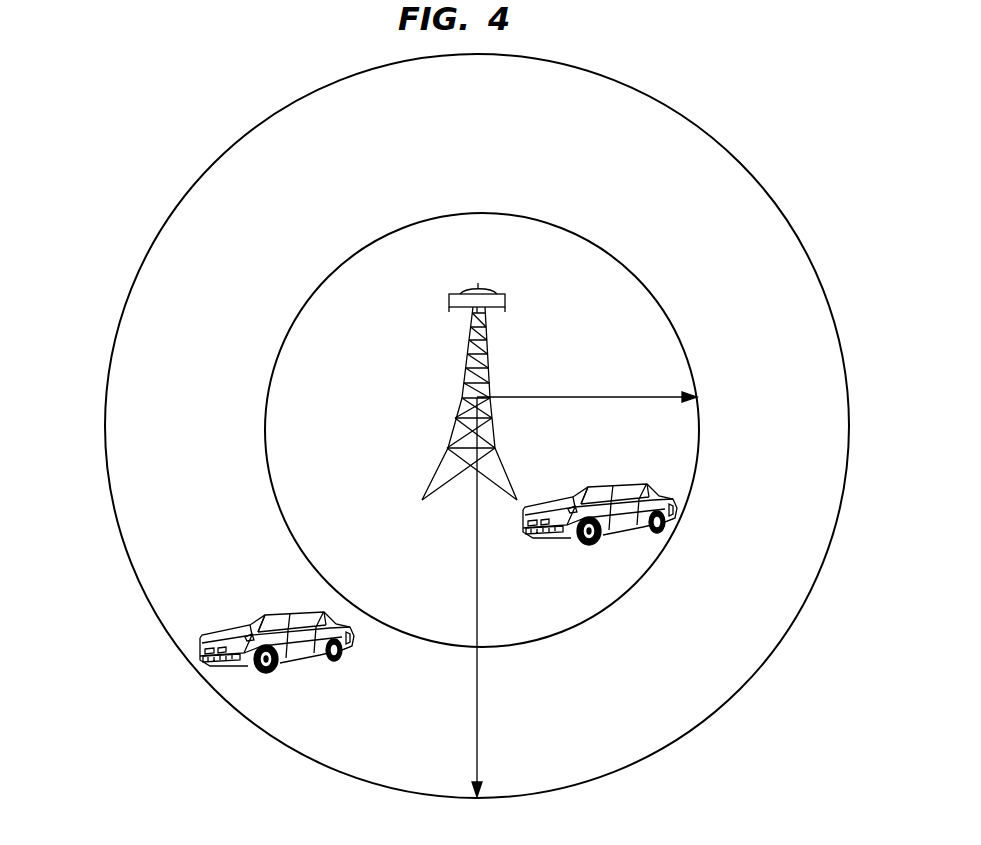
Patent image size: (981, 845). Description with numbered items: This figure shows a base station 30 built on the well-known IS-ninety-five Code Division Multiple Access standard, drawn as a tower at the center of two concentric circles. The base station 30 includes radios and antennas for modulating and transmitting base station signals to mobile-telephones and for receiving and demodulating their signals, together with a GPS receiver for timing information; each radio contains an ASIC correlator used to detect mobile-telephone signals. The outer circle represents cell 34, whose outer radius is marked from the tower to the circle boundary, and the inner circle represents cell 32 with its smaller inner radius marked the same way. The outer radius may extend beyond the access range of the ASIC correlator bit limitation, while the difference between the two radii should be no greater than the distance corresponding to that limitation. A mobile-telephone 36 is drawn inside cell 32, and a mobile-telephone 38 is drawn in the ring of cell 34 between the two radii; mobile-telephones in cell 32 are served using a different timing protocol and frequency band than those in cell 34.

The base station 30 is at (505, 300).
The cell 32 is at (268, 400).
The cell 34 is at (128, 295).
The first vehicle 36 is at (545, 500).
The mobile-telephone 38 is at (228, 626).